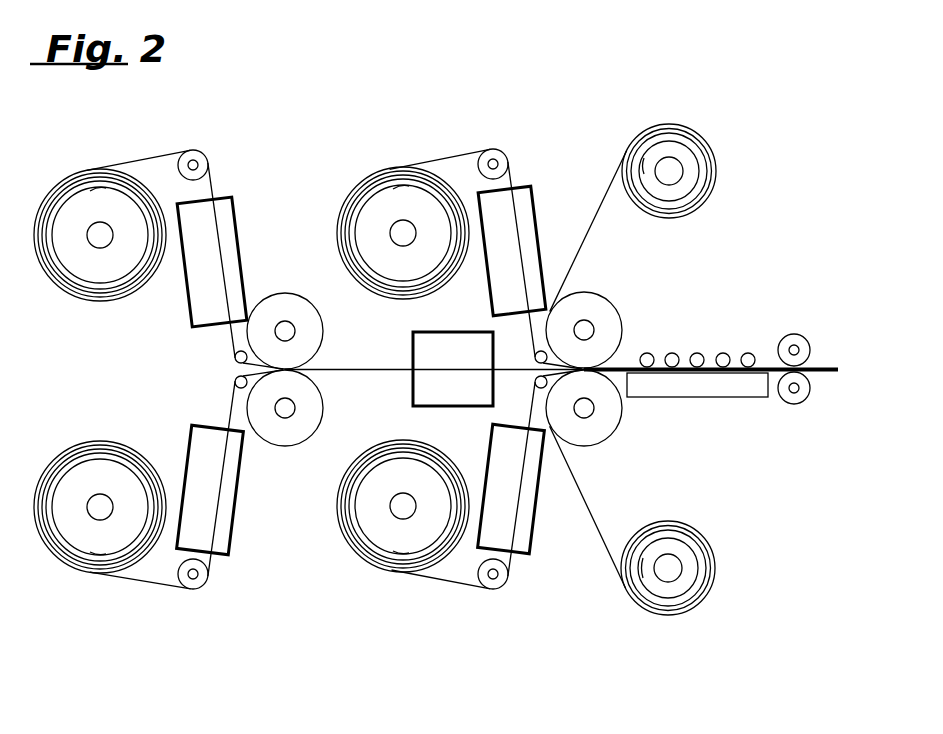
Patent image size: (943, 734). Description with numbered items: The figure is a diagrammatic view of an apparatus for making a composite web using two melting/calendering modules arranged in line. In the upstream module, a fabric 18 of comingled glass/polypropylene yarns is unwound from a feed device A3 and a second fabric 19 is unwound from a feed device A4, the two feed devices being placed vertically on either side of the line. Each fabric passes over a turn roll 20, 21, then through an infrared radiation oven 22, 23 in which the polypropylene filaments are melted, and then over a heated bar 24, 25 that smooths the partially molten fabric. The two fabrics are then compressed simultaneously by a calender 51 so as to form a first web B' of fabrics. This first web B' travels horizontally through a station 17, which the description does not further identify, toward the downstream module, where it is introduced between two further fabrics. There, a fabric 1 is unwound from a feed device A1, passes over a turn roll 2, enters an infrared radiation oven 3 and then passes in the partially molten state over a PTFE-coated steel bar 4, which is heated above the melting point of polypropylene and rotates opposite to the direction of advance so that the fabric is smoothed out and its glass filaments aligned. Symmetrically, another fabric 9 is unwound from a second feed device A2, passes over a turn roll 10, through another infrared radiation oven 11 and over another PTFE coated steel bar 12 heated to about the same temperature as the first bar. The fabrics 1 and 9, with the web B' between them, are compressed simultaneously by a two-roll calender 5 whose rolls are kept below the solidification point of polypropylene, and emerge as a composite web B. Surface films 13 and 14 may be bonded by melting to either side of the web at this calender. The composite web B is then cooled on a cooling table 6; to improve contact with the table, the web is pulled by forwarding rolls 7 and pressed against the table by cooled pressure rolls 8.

The fabric 1 is at (428, 155).
The turn roll 2 is at (498, 160).
The infrared radiation oven 3 is at (534, 198).
The PTFE-coated steel bar 4 is at (534, 353).
The two-roll calender 5 is at (603, 308).
The cooling table 6 is at (712, 390).
The forwarding rolls 7 is at (798, 340).
The cooled pressure rolls 8 is at (697, 354).
The fabric 9 is at (442, 588).
The turn roll 10 is at (500, 580).
The infrared radiation oven 11 is at (534, 540).
The PTFE coated steel bar 12 is at (534, 388).
The surface film 13 is at (600, 152).
The surface film 14 is at (612, 570).
The treatment station 17 is at (413, 350).
The fabric 18 is at (128, 157).
The fabric 19 is at (127, 583).
The turn roll 20 is at (198, 158).
The turn roll 21 is at (198, 580).
The infrared radiation oven 22 is at (234, 198).
The infrared radiation oven 23 is at (234, 540).
The bar 24 is at (235, 355).
The bar 25 is at (235, 385).
The calender 51 is at (276, 306).
The feed device A1 is at (377, 200).
The feed device A2 is at (375, 540).
The feed device A3 is at (73, 207).
The feed device A4 is at (73, 535).
The composite web B is at (721, 410).
The first web of fabrics B' is at (434, 405).